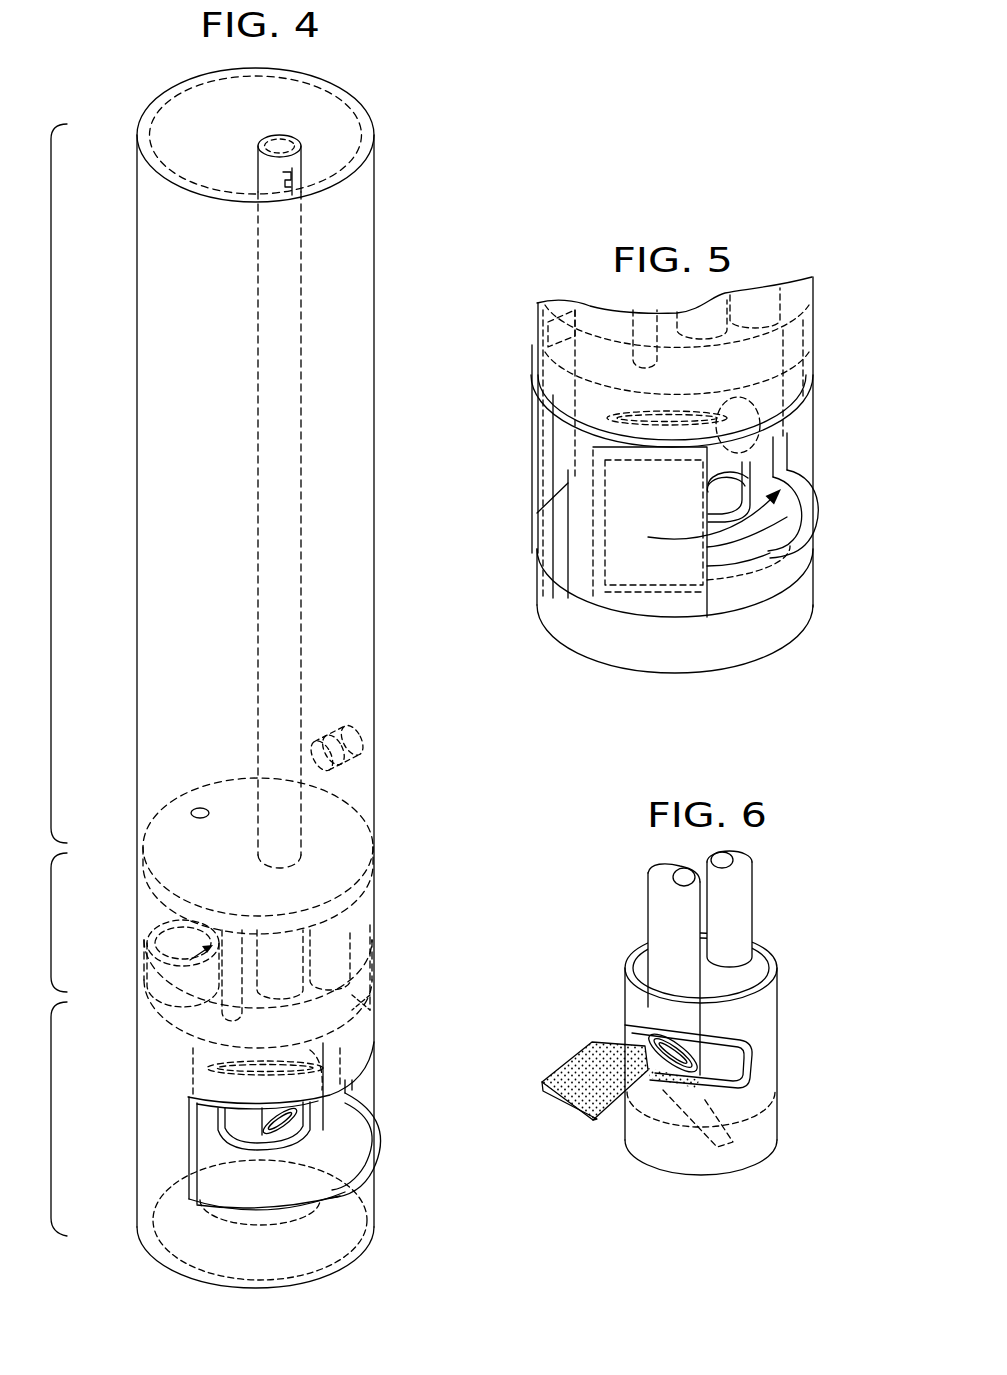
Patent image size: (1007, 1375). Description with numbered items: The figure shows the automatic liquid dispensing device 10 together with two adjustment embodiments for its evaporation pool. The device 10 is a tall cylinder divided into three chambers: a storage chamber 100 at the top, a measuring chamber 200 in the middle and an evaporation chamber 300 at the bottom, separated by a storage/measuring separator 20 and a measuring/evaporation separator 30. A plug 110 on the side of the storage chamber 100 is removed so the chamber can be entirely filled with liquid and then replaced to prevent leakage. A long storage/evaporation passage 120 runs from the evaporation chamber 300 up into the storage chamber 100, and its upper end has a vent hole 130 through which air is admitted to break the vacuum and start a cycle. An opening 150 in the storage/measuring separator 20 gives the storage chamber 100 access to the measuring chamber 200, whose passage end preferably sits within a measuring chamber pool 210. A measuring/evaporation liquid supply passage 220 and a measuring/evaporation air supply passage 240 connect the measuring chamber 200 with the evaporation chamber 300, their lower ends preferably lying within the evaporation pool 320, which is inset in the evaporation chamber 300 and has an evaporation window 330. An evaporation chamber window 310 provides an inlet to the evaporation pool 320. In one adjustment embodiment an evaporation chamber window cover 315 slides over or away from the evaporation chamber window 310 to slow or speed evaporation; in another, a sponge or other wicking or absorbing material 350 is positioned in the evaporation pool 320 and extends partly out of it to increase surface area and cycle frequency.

In FIG. 4, the automatic liquid dispensing device 10 is at (408, 146).
In FIG. 4, the storage/measuring separator 20 is at (360, 849).
In FIG. 4, the measuring/evaporation separator 30 is at (360, 998).
In FIG. 4, the storage chamber 100 is at (51, 483).
In FIG. 4, the plug 110 is at (364, 757).
In FIG. 4, the storage/evaporation passage 120 is at (268, 258).
In FIG. 6, the storage/evaporation passage 120 is at (657, 910).
In FIG. 4, the vent hole 130 is at (272, 188).
In FIG. 4, the opening 150 is at (201, 808).
In FIG. 4, the measuring chamber 200 is at (51, 922).
In FIG. 4, the measuring chamber pool 210 is at (159, 973).
In FIG. 4, the measuring/evaporation liquid supply passage 220 is at (227, 1011).
In FIG. 4, the measuring/evaporation air supply passage 240 is at (344, 928).
In FIG. 6, the measuring/evaporation air supply passage 240 is at (745, 905).
In FIG. 4, the evaporation chamber 300 is at (204, 1141).
In FIG. 5, the evaporation chamber 300 is at (515, 345).
In FIG. 5, the evaporation chamber window 310 is at (818, 383).
In FIG. 5, the evaporation chamber window cover 315 is at (661, 600).
In FIG. 4, the evaporation pool 320 is at (316, 1156).
In FIG. 5, the evaporation pool 320 is at (778, 539).
In FIG. 6, the evaporation pool 320 is at (622, 1104).
In FIG. 4, the evaporation window 330 is at (322, 1121).
In FIG. 6, the evaporation window 330 is at (645, 1048).
In FIG. 6, the sponge or other wicking or absorbing material 350 is at (586, 1068).